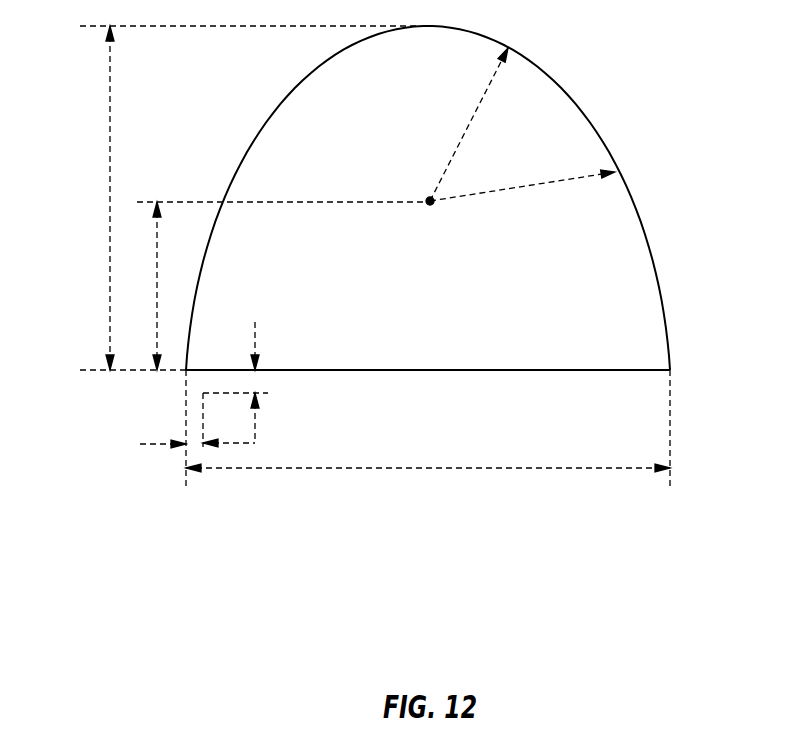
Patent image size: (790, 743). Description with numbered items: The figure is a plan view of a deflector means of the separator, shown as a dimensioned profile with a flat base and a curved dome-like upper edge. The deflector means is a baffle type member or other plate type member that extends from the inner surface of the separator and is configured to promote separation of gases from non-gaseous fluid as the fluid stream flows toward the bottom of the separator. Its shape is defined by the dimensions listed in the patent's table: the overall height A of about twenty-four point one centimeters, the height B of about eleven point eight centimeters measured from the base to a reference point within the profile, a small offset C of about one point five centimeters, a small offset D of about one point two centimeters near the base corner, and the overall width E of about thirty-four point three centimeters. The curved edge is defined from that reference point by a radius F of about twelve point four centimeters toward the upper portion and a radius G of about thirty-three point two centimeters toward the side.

The dimension A is at (110, 173).
The dimension B is at (157, 287).
The dimension C is at (257, 341).
The dimension D is at (160, 443).
The dimension E is at (458, 470).
The radius F is at (510, 43).
The radius G is at (618, 170).